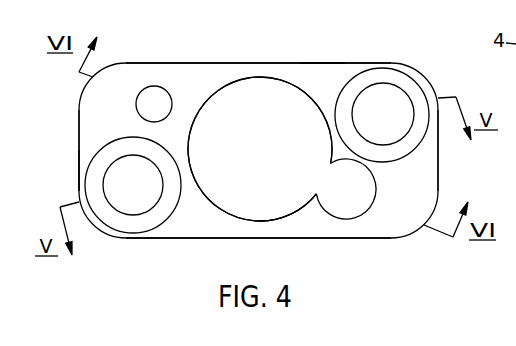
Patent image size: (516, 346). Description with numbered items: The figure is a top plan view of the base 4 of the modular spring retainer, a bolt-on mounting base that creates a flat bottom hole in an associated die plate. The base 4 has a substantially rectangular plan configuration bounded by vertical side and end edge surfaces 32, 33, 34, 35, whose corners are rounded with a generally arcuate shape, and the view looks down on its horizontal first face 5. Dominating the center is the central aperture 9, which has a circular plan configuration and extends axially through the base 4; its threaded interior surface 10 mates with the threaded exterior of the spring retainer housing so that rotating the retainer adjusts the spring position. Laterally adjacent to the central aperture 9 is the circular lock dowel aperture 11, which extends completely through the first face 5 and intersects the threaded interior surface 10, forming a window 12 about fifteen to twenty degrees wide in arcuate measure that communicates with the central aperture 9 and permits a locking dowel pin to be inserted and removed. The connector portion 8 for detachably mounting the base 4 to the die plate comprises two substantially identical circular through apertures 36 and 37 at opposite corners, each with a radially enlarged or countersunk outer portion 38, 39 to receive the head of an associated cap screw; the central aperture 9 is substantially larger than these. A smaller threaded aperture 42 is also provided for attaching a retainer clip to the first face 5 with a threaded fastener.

The base 4 is at (85, 93).
The first face 5 is at (319, 80).
The connector portion 8 is at (68, 175).
The central aperture 9 is at (240, 82).
The threaded interior surface 10 is at (271, 95).
The lock dowel aperture 11 is at (349, 197).
The window 12 is at (319, 182).
The vertical side and end edge surface 32 is at (172, 238).
The vertical side and end edge surface 33 is at (218, 63).
The vertical side and end edge surface 34 is at (78, 145).
The vertical side and end edge surface 35 is at (438, 155).
The through aperture 36 is at (383, 107).
The through aperture 37 is at (118, 170).
The countersunk outer portion 38 is at (368, 77).
The countersunk outer portion 39 is at (125, 225).
The threaded aperture 42 is at (163, 86).